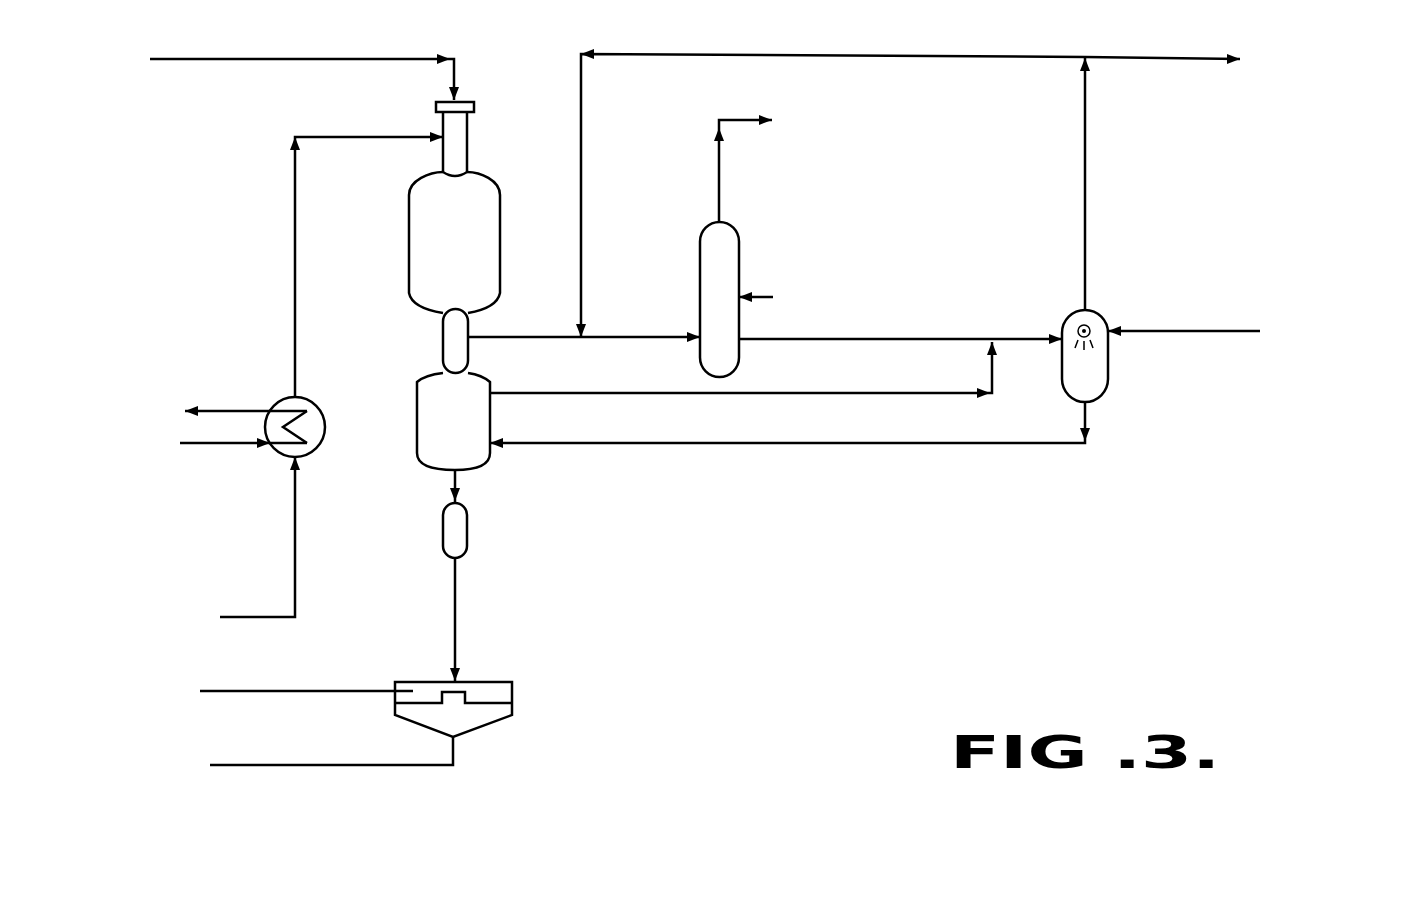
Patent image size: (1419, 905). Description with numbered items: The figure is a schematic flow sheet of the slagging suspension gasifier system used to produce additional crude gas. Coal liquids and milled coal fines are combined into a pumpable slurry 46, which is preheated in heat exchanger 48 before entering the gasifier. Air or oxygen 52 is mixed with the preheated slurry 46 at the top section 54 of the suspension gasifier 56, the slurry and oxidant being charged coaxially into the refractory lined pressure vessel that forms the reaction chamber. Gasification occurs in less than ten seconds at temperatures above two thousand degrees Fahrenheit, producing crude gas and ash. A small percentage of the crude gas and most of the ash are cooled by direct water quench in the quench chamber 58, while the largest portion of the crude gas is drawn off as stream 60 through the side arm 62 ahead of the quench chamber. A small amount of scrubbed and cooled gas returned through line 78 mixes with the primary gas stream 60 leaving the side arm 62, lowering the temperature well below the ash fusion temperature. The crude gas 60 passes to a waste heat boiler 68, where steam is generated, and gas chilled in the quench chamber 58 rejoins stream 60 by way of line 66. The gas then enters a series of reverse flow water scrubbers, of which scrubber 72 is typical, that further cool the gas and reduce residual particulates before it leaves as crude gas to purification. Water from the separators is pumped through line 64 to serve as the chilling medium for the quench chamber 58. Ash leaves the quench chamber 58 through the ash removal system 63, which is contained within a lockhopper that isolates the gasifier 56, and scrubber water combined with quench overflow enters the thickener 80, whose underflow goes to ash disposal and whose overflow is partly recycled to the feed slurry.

The pumpable slurry 46 is at (347, 135).
The heat exchanger 48 is at (318, 410).
The air or oxygen 52 is at (341, 58).
The top section 54 is at (470, 148).
The suspension gasifier 56 is at (500, 233).
The quench chamber 58 is at (430, 378).
The crude gas stream 60 is at (540, 338).
The side arm 62 is at (471, 332).
The ash removal system 63 is at (467, 528).
The line 64 is at (865, 446).
The gas transfer line 66 is at (838, 398).
The waste heat boiler 68 is at (740, 258).
The reverse flow water scrubber 72 is at (1105, 370).
The line 78 is at (584, 236).
The thickener 80 is at (513, 705).